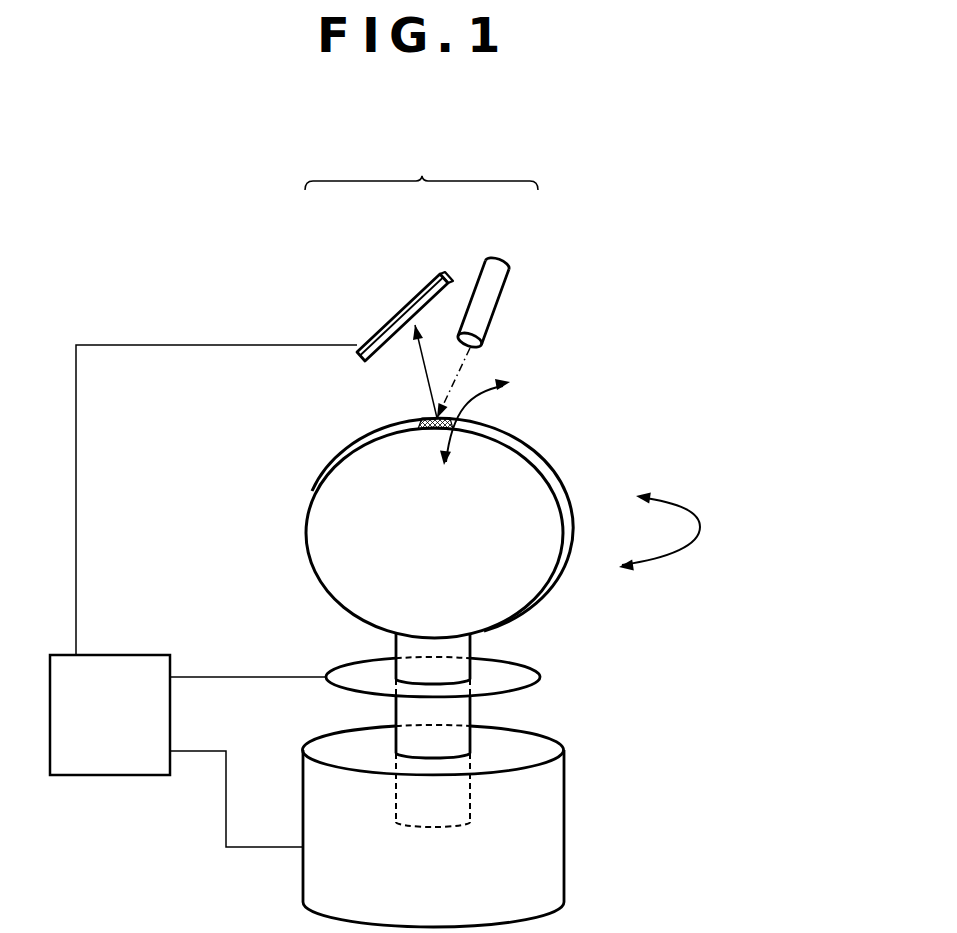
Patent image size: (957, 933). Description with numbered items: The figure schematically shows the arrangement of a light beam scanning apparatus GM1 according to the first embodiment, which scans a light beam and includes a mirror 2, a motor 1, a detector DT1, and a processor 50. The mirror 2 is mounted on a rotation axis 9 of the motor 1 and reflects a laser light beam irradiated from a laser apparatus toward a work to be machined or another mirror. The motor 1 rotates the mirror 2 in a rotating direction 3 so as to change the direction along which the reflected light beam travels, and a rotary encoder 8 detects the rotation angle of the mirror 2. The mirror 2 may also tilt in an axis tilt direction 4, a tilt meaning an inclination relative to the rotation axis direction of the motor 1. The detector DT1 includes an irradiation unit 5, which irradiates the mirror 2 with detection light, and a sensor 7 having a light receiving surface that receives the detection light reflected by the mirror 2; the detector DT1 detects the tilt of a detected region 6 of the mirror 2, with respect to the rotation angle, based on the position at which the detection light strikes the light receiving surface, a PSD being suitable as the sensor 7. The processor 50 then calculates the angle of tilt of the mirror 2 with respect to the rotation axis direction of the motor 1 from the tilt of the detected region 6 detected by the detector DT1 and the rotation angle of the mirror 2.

The motor 1 is at (537, 822).
The mirror 2 is at (345, 510).
The rotating direction 3 is at (700, 527).
The axis tilt direction 4 is at (473, 406).
The irradiation unit 5 is at (500, 262).
The detected region 6 is at (430, 424).
The sensor 7 is at (392, 322).
The rotary encoder 8 is at (505, 672).
The rotation axis 9 is at (457, 713).
The processor 50 is at (115, 777).
The detector DT1 is at (421, 166).
The light beam scanning apparatus GM1 is at (602, 899).